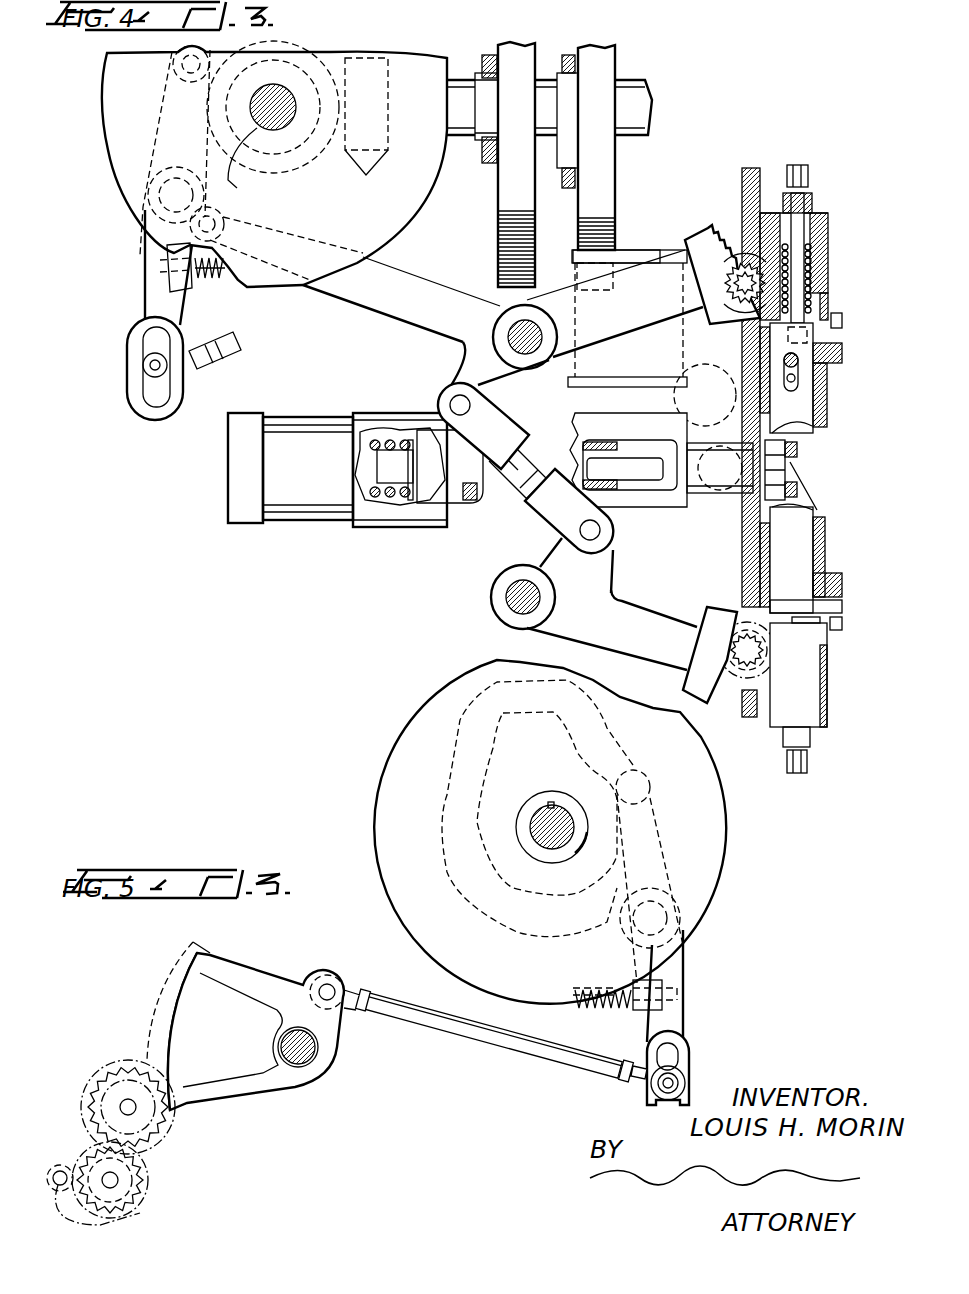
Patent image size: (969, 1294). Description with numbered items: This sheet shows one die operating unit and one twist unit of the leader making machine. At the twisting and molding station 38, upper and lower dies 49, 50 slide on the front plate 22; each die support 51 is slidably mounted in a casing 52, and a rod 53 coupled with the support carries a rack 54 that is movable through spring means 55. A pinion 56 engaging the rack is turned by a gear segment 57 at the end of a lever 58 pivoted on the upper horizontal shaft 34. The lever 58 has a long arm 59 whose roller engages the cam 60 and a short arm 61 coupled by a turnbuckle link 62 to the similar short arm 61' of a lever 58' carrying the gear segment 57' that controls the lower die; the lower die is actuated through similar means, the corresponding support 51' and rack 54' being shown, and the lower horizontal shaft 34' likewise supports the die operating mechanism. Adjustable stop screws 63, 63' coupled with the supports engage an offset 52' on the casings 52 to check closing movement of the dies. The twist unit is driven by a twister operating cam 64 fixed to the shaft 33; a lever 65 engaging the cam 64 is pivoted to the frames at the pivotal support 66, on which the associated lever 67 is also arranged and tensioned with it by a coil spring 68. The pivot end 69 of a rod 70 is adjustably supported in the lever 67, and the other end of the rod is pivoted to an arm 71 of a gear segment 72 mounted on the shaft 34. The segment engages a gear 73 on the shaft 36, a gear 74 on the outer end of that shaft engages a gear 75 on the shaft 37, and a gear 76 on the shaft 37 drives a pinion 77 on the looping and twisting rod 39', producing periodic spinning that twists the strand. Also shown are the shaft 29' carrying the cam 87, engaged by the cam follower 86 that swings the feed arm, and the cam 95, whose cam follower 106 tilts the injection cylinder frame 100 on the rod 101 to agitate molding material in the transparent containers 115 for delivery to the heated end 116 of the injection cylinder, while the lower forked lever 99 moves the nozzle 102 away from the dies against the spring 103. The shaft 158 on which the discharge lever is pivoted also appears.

In FIG. 4, the front plate 22 is at (750, 168).
In FIG. 4, the shaft 29' is at (564, 123).
In FIG. 4, the shaft 33 is at (541, 807).
In FIG. 4, the upper horizontal shaft 34 is at (504, 332).
In FIG. 5, the upper horizontal shaft 34 is at (276, 1031).
In FIG. 4, the lower horizontal shaft 34' is at (502, 597).
In FIG. 5, the shaft 36 is at (136, 1112).
In FIG. 5, the shaft 37 is at (118, 1183).
In FIG. 4, the twisting and molding station 38 is at (840, 193).
In FIG. 5, the looping and twisting rod 39' is at (112, 1206).
In FIG. 4, the upper die 49 is at (800, 420).
In FIG. 4, the lower die 50 is at (800, 510).
In FIG. 4, the die support 51 is at (820, 470).
In FIG. 4, the pin 51' is at (746, 352).
In FIG. 4, the casing 52 is at (823, 468).
In FIG. 4, the offset 52' is at (848, 470).
In FIG. 4, the rod 53 is at (800, 280).
In FIG. 4, the rack 54 is at (794, 221).
In FIG. 4, the lower housing 54' is at (823, 695).
In FIG. 4, the spring means 55 is at (813, 243).
In FIG. 4, the pinion 56 is at (743, 262).
In FIG. 4, the gear segment 57 is at (711, 259).
In FIG. 4, the gear segment 57' is at (710, 632).
In FIG. 4, the lever 58 is at (615, 308).
In FIG. 4, the lever 58' is at (612, 616).
In FIG. 4, the long arm 59 is at (372, 302).
In FIG. 4, the cam 60 is at (425, 215).
In FIG. 4, the short arm 61 is at (471, 367).
In FIG. 4, the short arm 61' is at (550, 531).
In FIG. 4, the turnbuckle link 62 is at (513, 408).
In FIG. 4, the adjustable stop screw 63 is at (851, 302).
In FIG. 4, the adjustable stop screw 63' is at (854, 635).
In FIG. 4, the twister operating cam 64 is at (728, 805).
In FIG. 4, the lever 65 is at (158, 112).
In FIG. 4, the pivotal support 66 is at (157, 200).
In FIG. 4, the lever 67 is at (145, 297).
In FIG. 4, the coil spring 68 is at (200, 278).
In FIG. 4, the pivot end 69 is at (143, 363).
In FIG. 4, the rod 70 is at (235, 358).
In FIG. 5, the rod 70 is at (462, 1045).
In FIG. 5, the arm 71 is at (332, 982).
In FIG. 5, the gear segment 72 is at (205, 950).
In FIG. 5, the gear 73 is at (107, 1063).
In FIG. 5, the gear 74 is at (125, 1062).
In FIG. 5, the gear 75 is at (135, 1165).
In FIG. 5, the gear 76 is at (140, 1183).
In FIG. 5, the pinion 77 is at (58, 1170).
In FIG. 4, the cam follower 86 is at (485, 163).
In FIG. 4, the cam 87 is at (498, 240).
In FIG. 4, the cam 95 is at (605, 192).
In FIG. 4, the lower forked lever 99 is at (657, 443).
In FIG. 4, the injection cylinder frame 100 is at (470, 508).
In FIG. 4, the rod 101 is at (576, 428).
In FIG. 4, the nozzle 102 is at (760, 478).
In FIG. 4, the spring 103 is at (375, 497).
In FIG. 4, the cam follower 106 is at (565, 188).
In FIG. 4, the transparent container 115 is at (630, 318).
In FIG. 4, the heated end 116 is at (718, 440).
In FIG. 4, the shaft 158 is at (800, 360).